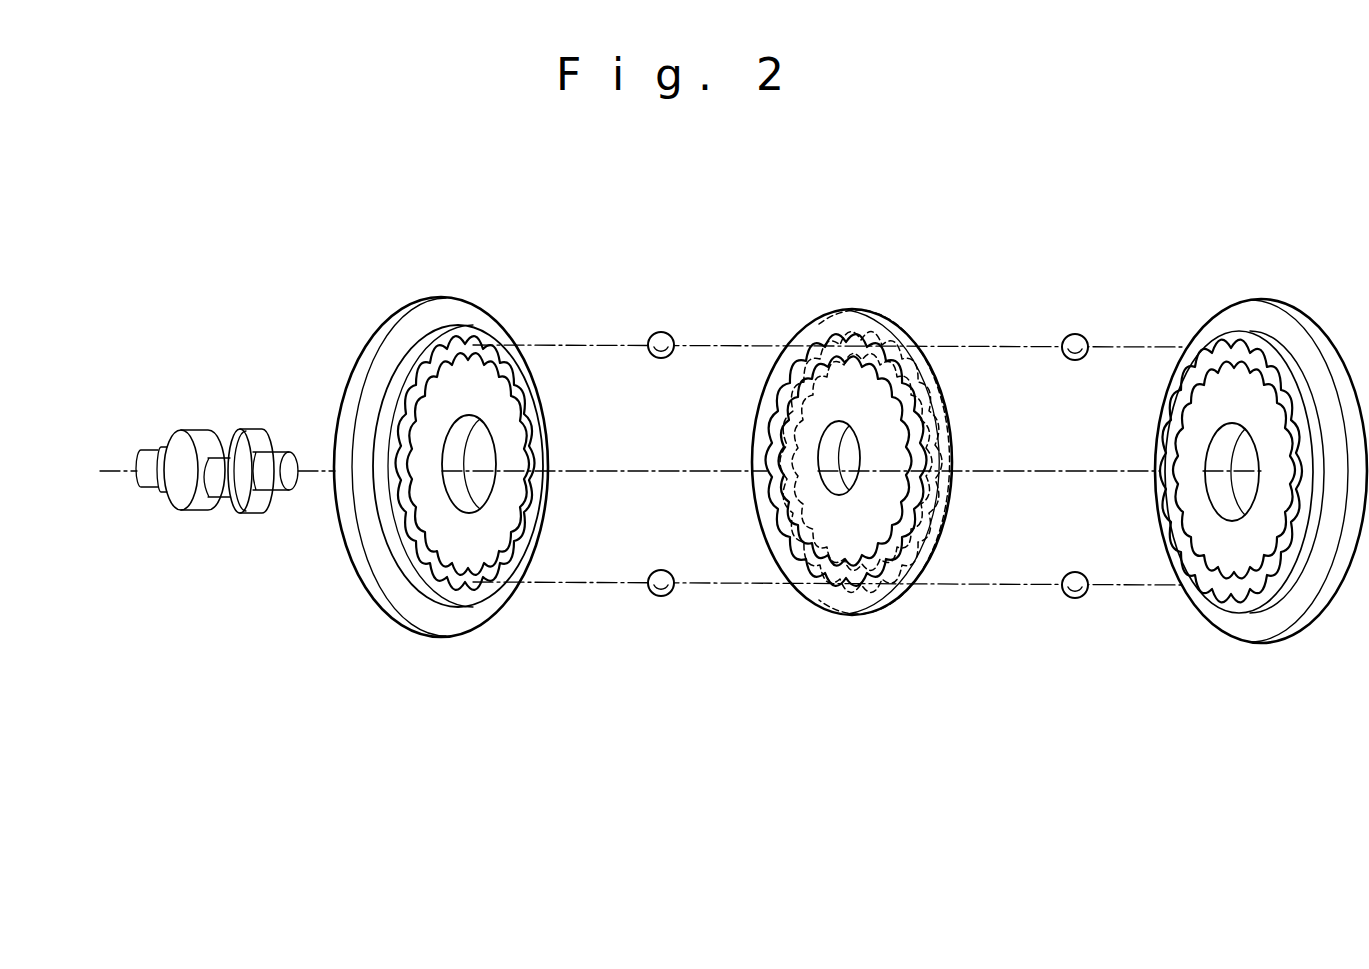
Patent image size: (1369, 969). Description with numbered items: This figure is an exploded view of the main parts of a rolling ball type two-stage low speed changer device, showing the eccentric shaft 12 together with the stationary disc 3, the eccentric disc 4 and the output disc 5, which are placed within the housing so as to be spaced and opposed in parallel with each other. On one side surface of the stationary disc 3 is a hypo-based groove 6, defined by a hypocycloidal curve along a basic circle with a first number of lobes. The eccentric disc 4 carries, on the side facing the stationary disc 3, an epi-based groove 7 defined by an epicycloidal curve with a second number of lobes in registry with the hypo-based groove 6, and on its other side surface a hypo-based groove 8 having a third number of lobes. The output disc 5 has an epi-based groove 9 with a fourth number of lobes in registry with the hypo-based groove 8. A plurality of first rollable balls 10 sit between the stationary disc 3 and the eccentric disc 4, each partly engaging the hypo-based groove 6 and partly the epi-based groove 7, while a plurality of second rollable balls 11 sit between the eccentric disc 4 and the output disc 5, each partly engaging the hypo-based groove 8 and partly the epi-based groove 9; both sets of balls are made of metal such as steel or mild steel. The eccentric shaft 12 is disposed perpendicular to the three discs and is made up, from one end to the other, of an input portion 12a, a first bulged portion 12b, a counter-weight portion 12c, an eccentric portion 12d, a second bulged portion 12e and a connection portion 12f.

The stationary disc 3 is at (400, 313).
The eccentric disc 4 is at (820, 322).
The output disc 5 is at (1265, 318).
The hypo-based groove 6 is at (462, 343).
The epi-based groove 7 is at (842, 340).
The hypo-based groove 8 is at (902, 322).
The epi-based groove 9 is at (1268, 358).
The first rollable balls 10 is at (661, 332).
The second rollable balls 11 is at (1081, 337).
The eccentric shaft 12 is at (206, 468).
The input portion 12a is at (143, 482).
The first bulged portion 12b is at (165, 497).
The counter-weight portion 12c is at (204, 443).
The eccentric portion 12d is at (218, 490).
The second bulged portion 12e is at (260, 497).
The connection portion 12f is at (267, 458).